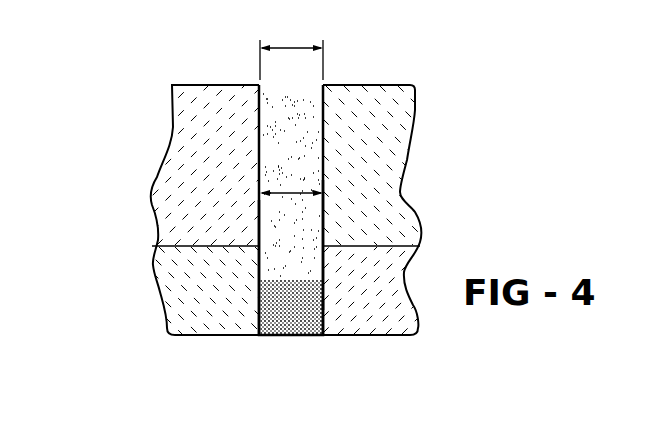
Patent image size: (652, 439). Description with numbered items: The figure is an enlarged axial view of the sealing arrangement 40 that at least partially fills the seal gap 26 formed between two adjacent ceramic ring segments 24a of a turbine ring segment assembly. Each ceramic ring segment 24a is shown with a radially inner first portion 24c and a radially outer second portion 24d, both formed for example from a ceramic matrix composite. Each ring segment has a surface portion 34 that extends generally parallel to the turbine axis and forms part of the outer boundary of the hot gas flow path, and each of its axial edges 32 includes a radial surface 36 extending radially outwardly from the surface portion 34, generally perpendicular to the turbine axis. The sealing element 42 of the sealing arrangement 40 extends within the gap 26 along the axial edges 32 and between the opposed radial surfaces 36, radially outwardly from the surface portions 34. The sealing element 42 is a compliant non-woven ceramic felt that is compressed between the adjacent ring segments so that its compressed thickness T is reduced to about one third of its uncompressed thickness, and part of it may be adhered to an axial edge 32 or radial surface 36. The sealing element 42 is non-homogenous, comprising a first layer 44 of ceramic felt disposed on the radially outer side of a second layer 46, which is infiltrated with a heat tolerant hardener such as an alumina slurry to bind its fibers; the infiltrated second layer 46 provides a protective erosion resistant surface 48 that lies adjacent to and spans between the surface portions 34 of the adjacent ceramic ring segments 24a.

The ceramic ring segment 24a is at (128, 347).
The first portion 24c is at (163, 280).
The second portion 24d is at (158, 188).
The seal gap 26 is at (290, 192).
The axial edge 32 is at (257, 338).
The surface portion 34 is at (203, 337).
The radial surface 36 is at (262, 126).
The sealing arrangement 40 is at (260, 338).
The sealing element 42 is at (252, 260).
The first layer 44 is at (313, 258).
The second layer 46 is at (323, 305).
The protective erosion resistant surface 48 is at (325, 340).
The compressed thickness T is at (291, 52).